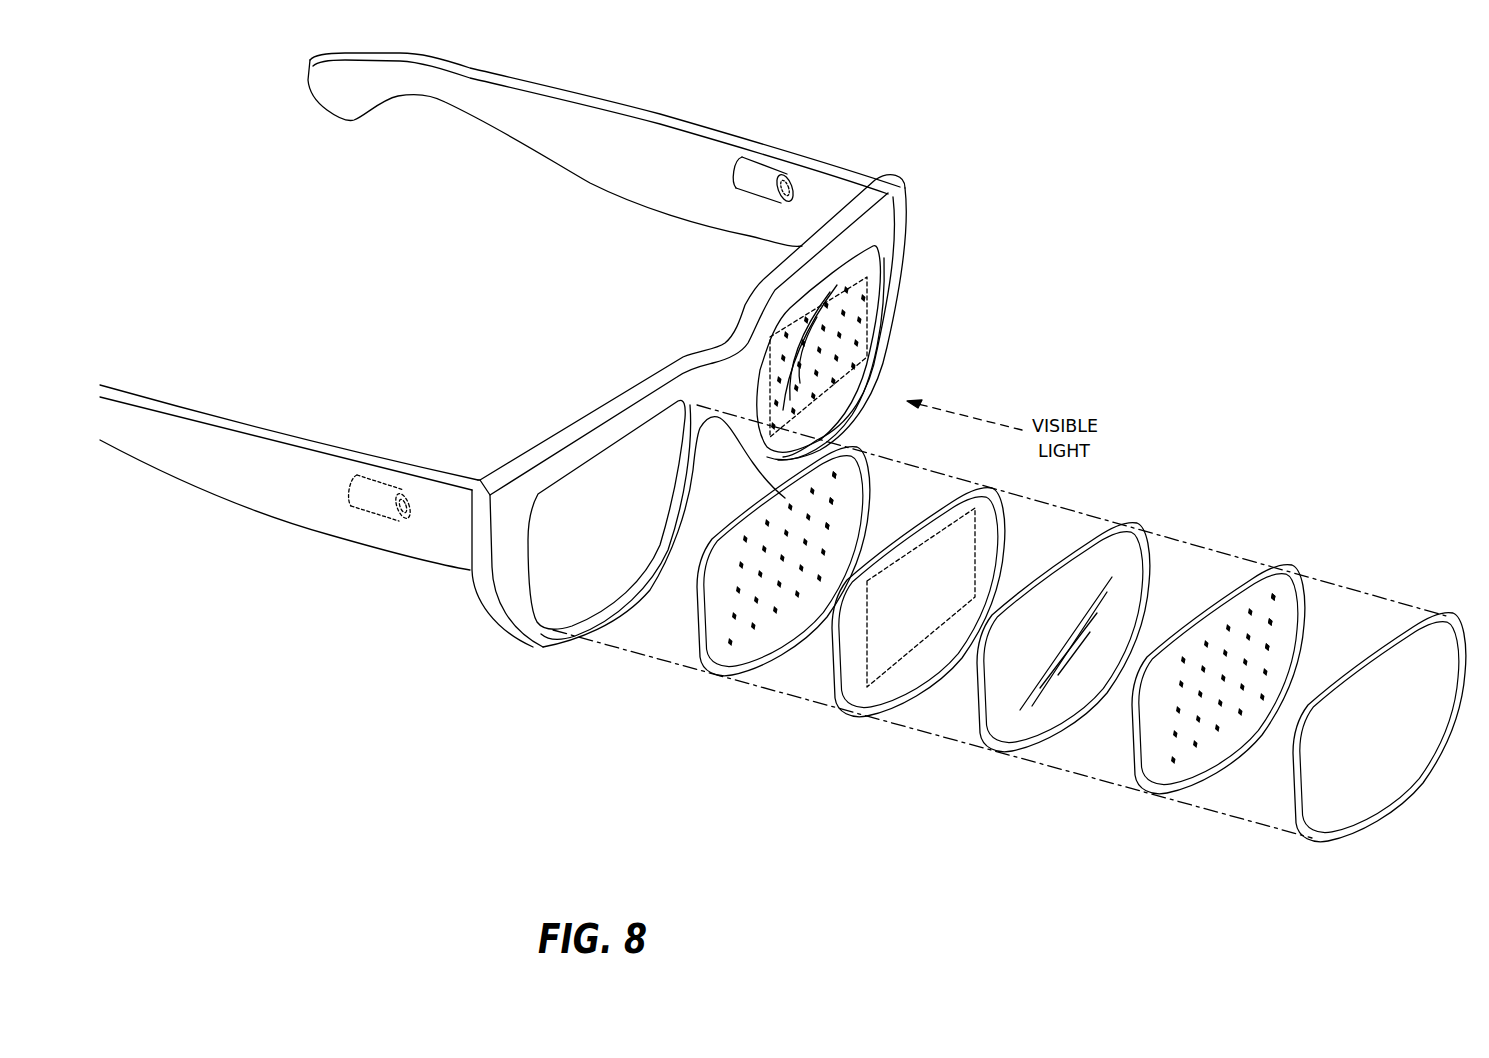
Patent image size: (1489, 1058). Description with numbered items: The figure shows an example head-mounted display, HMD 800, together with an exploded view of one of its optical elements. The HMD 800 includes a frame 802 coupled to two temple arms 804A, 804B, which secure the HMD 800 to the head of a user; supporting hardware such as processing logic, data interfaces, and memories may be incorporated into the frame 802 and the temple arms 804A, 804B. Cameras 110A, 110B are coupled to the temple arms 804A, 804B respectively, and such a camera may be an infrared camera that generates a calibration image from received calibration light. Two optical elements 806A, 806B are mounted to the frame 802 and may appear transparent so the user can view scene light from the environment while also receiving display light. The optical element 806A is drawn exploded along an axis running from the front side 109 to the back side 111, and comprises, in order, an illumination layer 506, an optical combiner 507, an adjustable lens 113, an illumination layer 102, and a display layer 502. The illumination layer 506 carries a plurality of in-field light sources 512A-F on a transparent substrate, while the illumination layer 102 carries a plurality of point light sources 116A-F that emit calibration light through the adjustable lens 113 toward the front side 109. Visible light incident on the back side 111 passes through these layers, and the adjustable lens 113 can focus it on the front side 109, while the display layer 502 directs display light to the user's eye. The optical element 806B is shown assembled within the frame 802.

The HMD 800 is at (1130, 164).
The frame 802 is at (734, 396).
The temple arm 804A is at (288, 493).
The temple arm 804B is at (637, 160).
The optical element 806A is at (1073, 680).
The optical element 806B is at (860, 342).
The camera 110A is at (373, 493).
The camera 110B is at (773, 173).
The front side 109 is at (535, 399).
The back side 111 is at (1403, 815).
The second illumination layer 506 is at (710, 673).
The optical combiner 507 is at (847, 714).
The adjustable lens 113 is at (992, 751).
The illumination layer 102 is at (1146, 792).
The display layer 502 is at (1379, 752).
The in-field light sources 512A-F is at (828, 527).
The point light sources 116A-F is at (1269, 647).